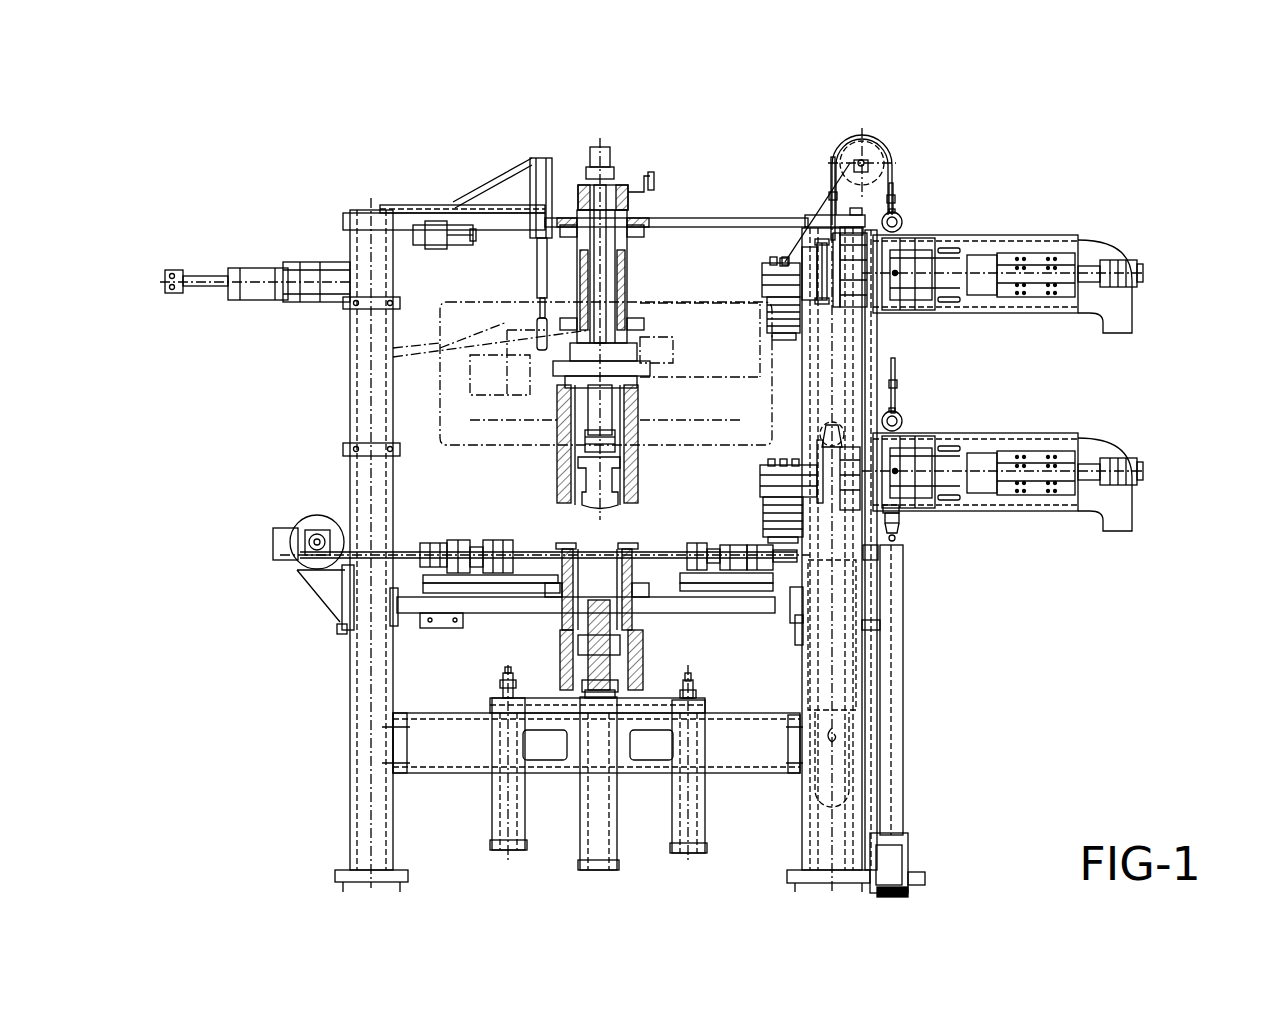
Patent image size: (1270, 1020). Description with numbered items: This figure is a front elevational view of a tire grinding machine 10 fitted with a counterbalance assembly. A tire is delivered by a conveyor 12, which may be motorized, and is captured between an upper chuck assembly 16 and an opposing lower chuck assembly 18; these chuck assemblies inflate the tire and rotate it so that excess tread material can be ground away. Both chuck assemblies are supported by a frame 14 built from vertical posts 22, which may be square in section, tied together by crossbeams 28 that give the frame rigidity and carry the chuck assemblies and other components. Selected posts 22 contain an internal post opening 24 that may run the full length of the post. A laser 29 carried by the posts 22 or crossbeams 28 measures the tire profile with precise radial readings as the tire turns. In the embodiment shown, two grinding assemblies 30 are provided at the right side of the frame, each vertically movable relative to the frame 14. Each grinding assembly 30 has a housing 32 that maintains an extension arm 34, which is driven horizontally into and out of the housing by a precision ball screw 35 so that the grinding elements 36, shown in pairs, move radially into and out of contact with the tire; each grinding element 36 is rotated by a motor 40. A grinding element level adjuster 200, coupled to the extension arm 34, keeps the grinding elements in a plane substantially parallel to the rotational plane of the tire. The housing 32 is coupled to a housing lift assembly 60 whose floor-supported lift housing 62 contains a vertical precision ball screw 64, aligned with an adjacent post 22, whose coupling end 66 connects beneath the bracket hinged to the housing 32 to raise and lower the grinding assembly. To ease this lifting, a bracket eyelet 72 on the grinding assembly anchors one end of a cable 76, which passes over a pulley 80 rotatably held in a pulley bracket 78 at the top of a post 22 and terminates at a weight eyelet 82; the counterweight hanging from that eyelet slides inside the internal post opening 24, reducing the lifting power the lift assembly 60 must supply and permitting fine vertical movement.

The tire grinding machine 10 is at (988, 143).
The conveyor 12 is at (528, 520).
The frame 14 is at (347, 764).
The upper chuck assembly 16 is at (648, 283).
The lower chuck assembly 18 is at (526, 630).
The vertical posts 22 is at (350, 500).
The internal post opening 24 is at (822, 228).
The crossbeams 28 is at (745, 617).
The laser 29 is at (368, 388).
The grinding assembly 30 is at (1051, 366).
The housing 32 is at (1020, 238).
The extension arm 34 is at (824, 542).
The precision ball screw 35 is at (985, 306).
The grinding element 36 is at (770, 276).
The motor 40 is at (776, 336).
The housing lift assembly 60 is at (946, 769).
The lift housing 62 is at (903, 730).
The precision ball screw 64 is at (940, 545).
The coupling end 66 is at (916, 528).
The bracket eyelet 72 is at (902, 222).
The cable 76 is at (886, 141).
The pulley bracket 78 is at (870, 206).
The pulley 80 is at (856, 132).
The weight eyelet 82 is at (818, 440).
The grinding element level adjuster 200 is at (793, 244).